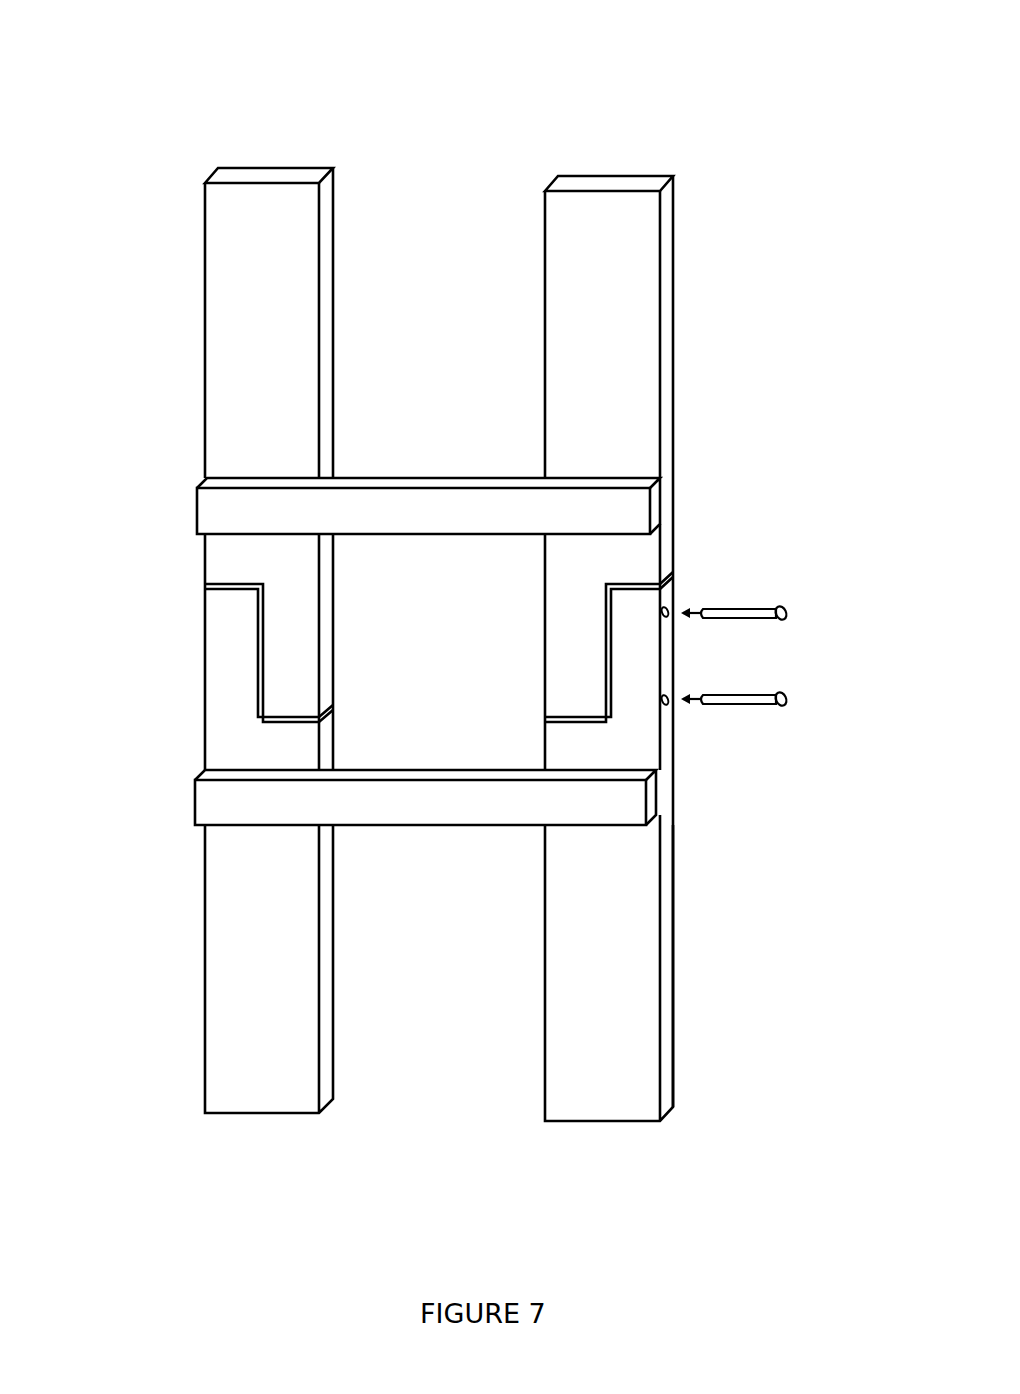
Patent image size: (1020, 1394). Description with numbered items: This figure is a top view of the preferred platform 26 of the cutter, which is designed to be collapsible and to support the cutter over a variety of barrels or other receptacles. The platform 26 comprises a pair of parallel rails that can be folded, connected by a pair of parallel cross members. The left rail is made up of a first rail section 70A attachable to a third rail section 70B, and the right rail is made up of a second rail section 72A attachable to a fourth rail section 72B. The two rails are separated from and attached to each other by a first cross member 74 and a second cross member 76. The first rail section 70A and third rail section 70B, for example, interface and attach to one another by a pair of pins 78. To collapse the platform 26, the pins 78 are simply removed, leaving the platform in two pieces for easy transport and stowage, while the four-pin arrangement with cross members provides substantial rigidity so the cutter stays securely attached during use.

The platform 26 is at (444, 110).
The first rail section 70A is at (250, 368).
The third rail section 70B is at (250, 1043).
The second rail section 72A is at (618, 372).
The fourth rail section 72B is at (612, 1032).
The first cross member 74 is at (208, 505).
The second cross member 76 is at (208, 805).
The pins 78 is at (790, 698).